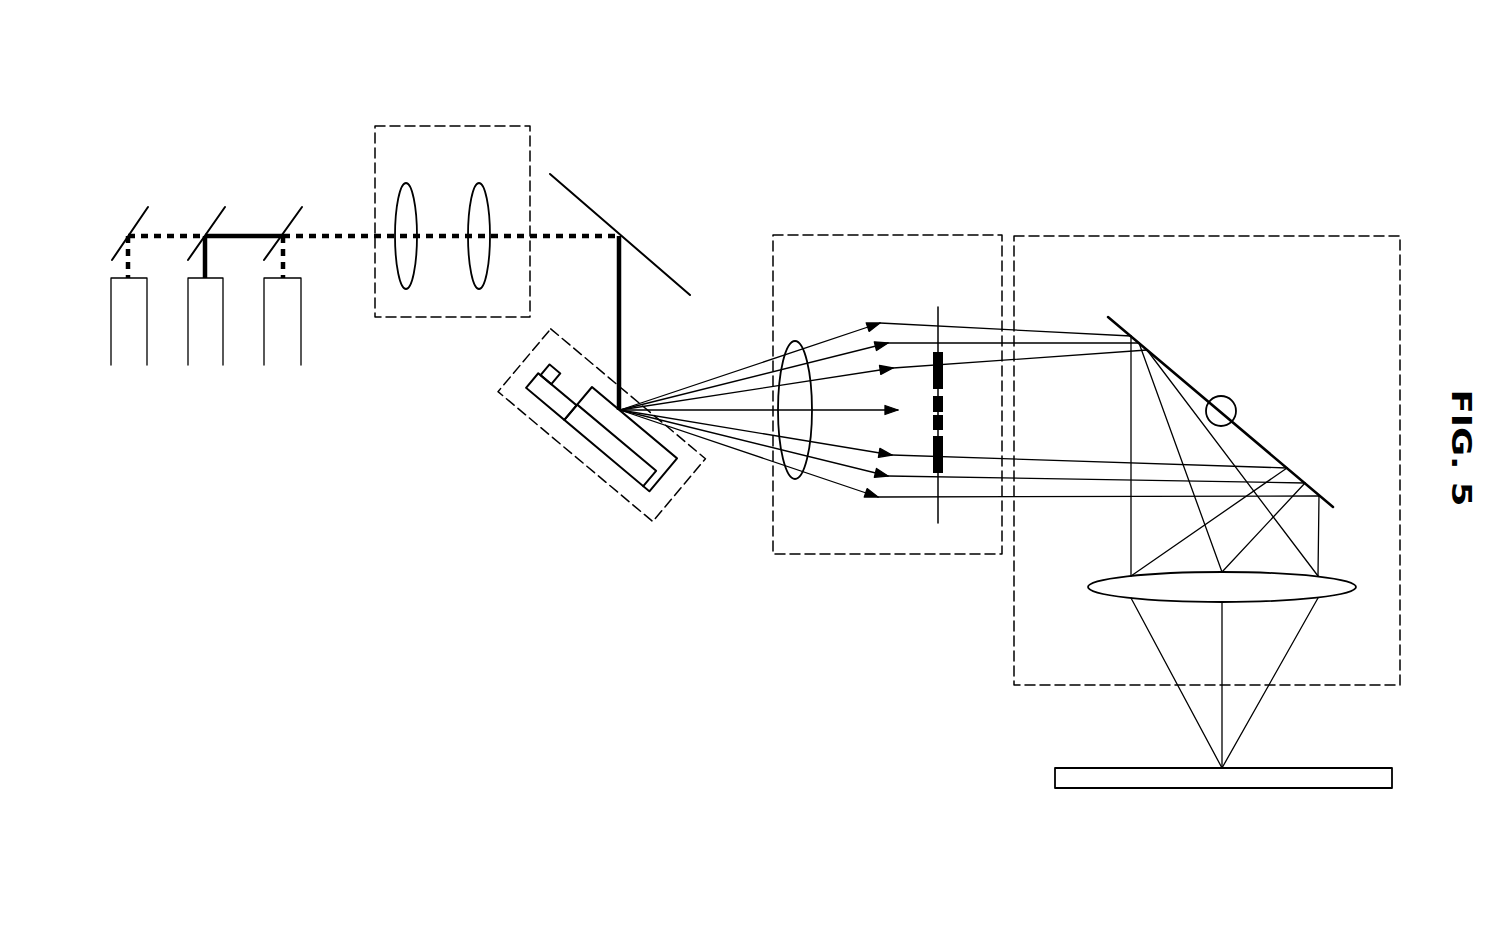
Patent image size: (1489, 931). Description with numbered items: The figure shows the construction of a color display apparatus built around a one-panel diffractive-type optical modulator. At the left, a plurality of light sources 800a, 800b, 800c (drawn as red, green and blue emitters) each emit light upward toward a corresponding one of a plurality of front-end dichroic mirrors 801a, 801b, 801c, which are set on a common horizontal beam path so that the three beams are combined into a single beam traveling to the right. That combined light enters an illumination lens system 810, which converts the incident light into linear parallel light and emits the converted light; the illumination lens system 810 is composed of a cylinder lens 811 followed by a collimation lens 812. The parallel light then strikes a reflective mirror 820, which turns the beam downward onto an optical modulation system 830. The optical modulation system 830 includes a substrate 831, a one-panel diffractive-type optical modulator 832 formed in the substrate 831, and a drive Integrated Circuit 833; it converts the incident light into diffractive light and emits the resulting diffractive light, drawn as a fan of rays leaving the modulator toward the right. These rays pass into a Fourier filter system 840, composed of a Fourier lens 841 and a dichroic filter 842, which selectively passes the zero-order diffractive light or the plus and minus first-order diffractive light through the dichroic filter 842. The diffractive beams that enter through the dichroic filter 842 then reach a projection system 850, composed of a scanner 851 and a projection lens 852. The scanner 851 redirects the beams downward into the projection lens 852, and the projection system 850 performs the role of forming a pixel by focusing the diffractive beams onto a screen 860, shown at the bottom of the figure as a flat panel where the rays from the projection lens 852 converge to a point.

The light source 800a is at (130, 360).
The light source 800b is at (207, 360).
The light source 800c is at (285, 360).
The front-end dichroic mirror 801a is at (134, 211).
The front-end dichroic mirror 801b is at (212, 211).
The front-end dichroic mirror 801c is at (289, 211).
The illumination lens system 810 is at (453, 126).
The cylinder lens 811 is at (414, 202).
The collimation lens 812 is at (489, 202).
The reflective mirror 820 is at (570, 190).
The optical modulation system 830 is at (673, 497).
The substrate 831 is at (612, 452).
The one-panel diffractive-type optical modulator 832 is at (655, 453).
The drive Integrated Circuit 833 is at (537, 398).
The Fourier filter system 840 is at (902, 235).
The Fourier lens 841 is at (800, 345).
The dichroic filter 842 is at (940, 307).
The projection system 850 is at (1207, 236).
The scanner 851 is at (1108, 313).
The projection lens 852 is at (1327, 600).
The screen 860 is at (1222, 790).